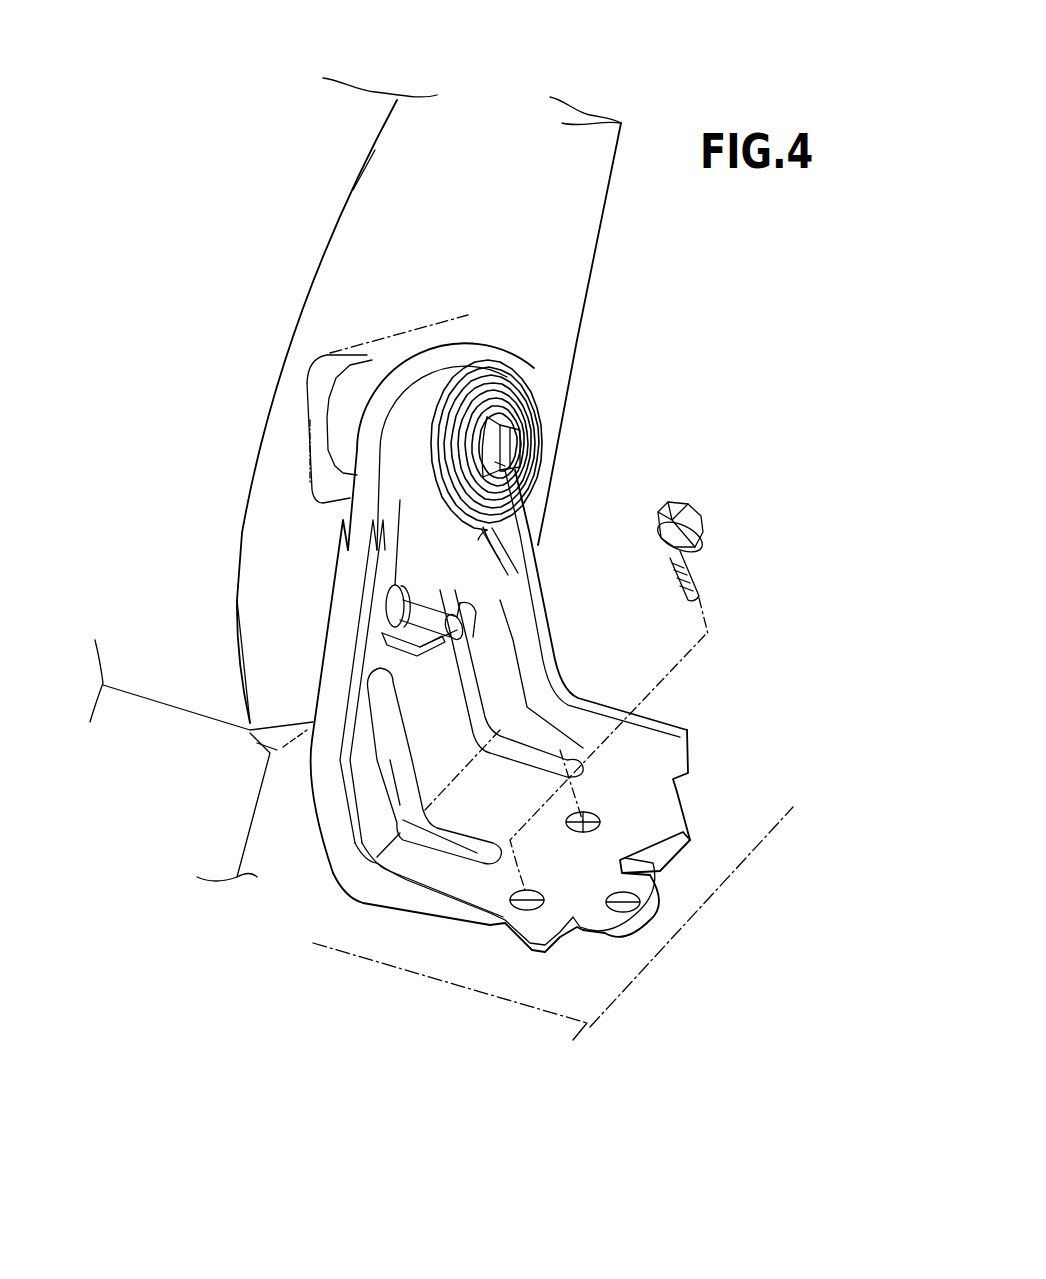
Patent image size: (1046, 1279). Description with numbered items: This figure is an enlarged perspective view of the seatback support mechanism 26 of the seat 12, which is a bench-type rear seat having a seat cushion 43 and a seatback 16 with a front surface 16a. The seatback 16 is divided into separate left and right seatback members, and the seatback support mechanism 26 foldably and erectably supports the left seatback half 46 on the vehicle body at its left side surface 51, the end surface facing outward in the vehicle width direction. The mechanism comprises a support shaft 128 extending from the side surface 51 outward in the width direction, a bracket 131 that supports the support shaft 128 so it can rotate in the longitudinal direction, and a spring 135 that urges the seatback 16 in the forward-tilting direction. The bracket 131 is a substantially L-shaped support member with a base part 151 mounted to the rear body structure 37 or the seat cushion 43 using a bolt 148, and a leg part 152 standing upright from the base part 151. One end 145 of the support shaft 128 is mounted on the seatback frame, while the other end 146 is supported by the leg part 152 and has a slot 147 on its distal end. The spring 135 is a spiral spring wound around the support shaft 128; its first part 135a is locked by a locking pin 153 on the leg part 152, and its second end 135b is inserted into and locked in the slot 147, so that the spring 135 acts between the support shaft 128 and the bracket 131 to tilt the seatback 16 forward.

The left side surface 51 is at (436, 133).
The front surface 16a is at (252, 170).
The end of the support shaft 145 is at (343, 418).
The slot 147 is at (500, 450).
The other end of the support shaft 146 is at (490, 463).
The support shaft 128 is at (543, 383).
The spring 135 is at (560, 424).
The seatback support mechanism 26 is at (643, 468).
The second end of the spring 135b is at (483, 527).
The first part of the spring 135a is at (427, 660).
The bolt 148 is at (703, 553).
The leg part 152 is at (503, 680).
The bracket 131 is at (566, 647).
The base part 151 is at (550, 810).
The locking pin 153 is at (387, 607).
The seatback 16 is at (187, 787).
The left seatback half 46 is at (155, 694).
The seat cushion 43 is at (192, 820).
The seat 12 is at (187, 791).
The rear body structure 37 is at (575, 1040).